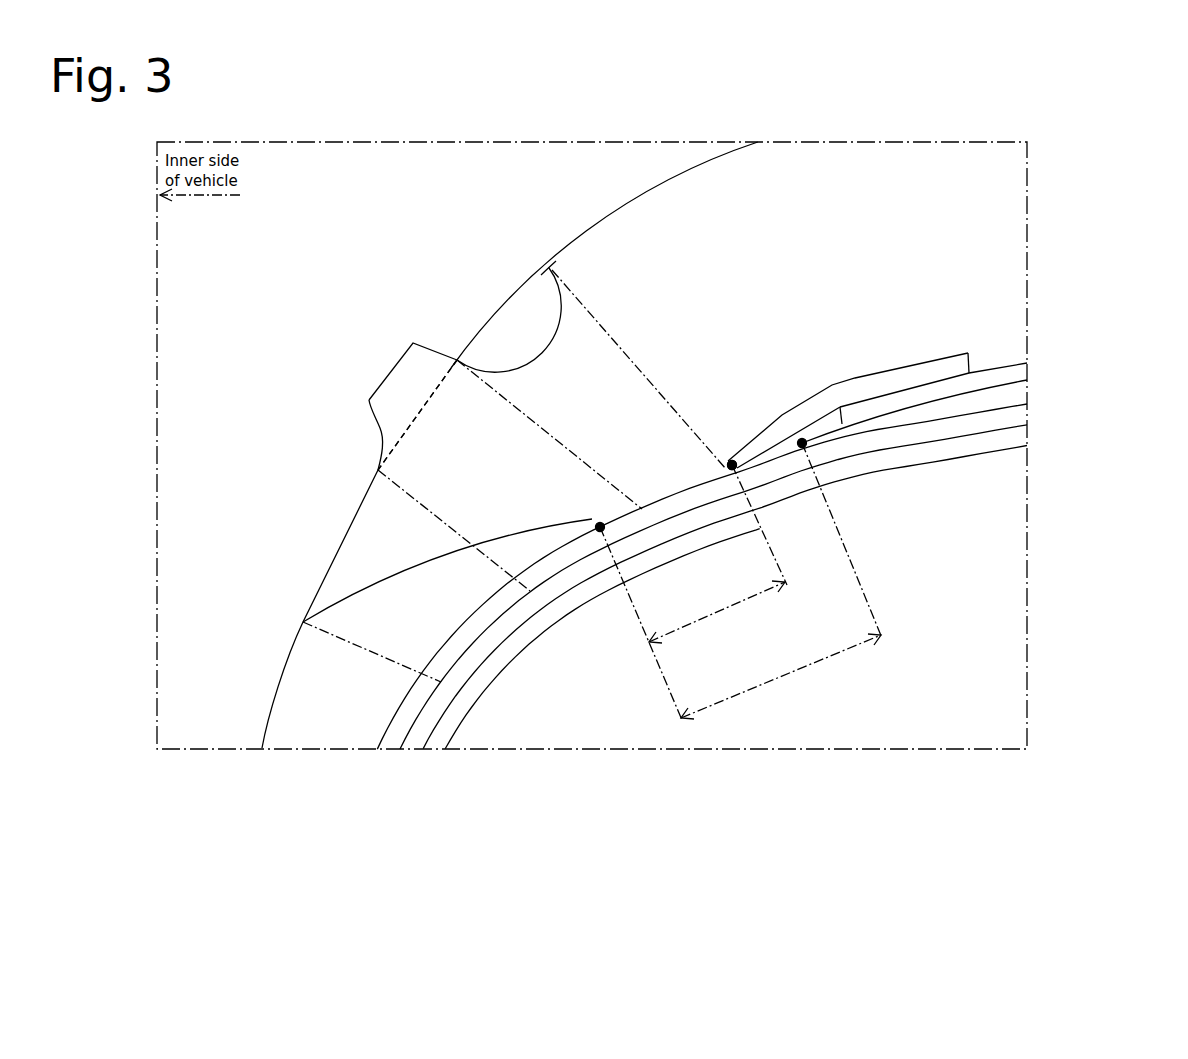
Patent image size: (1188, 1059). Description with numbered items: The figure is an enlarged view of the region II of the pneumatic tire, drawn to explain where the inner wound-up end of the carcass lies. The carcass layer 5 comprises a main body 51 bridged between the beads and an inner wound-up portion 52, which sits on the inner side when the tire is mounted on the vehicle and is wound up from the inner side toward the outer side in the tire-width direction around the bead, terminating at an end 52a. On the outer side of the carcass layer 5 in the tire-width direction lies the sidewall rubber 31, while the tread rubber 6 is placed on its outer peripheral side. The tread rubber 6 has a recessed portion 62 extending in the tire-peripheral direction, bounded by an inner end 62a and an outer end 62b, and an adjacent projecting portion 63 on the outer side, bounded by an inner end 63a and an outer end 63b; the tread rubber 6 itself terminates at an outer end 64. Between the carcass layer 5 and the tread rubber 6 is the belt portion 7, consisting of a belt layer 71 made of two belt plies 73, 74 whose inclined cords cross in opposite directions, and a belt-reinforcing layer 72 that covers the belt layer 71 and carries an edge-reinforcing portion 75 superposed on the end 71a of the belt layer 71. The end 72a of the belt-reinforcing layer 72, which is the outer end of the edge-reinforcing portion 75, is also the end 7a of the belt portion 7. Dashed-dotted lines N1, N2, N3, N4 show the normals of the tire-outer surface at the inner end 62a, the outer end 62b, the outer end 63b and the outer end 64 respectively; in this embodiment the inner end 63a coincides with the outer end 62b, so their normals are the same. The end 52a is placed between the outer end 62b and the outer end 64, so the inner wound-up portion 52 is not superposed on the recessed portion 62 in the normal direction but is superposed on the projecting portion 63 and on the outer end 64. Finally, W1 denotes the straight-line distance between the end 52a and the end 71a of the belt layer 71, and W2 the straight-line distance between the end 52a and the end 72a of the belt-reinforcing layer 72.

The carcass layer 5 is at (678, 638).
The main body 51 is at (410, 750).
The inner wound-up portion 52 is at (387, 750).
The end 52a is at (600, 522).
The tread rubber 6 is at (605, 200).
The recessed portion 62 is at (512, 328).
The inner end 62a is at (546, 268).
The outer end 62b is at (457, 360).
The projecting portion 63 is at (380, 386).
The inner end 63a is at (417, 415).
The outer end 63b is at (378, 470).
The outer end 64 is at (303, 622).
The sidewall rubber 31 is at (270, 717).
The belt portion 7 is at (897, 392).
The end 7a is at (732, 465).
The belt layer 71 is at (986, 380).
The end 71a is at (802, 450).
The belt-reinforcing layer 72 is at (962, 351).
The end 72a is at (727, 466).
The belt ply 73 is at (1030, 400).
The belt ply 74 is at (1030, 372).
The edge-reinforcing portion 75 is at (970, 353).
The dashed-dotted line N1 is at (662, 386).
The dashed-dotted line N2 is at (552, 440).
The dashed-dotted line N3 is at (443, 522).
The dashed-dotted line N4 is at (340, 638).
The straight line distance W1 is at (781, 676).
The straight line distance W2 is at (717, 612).
The region II is at (1030, 712).